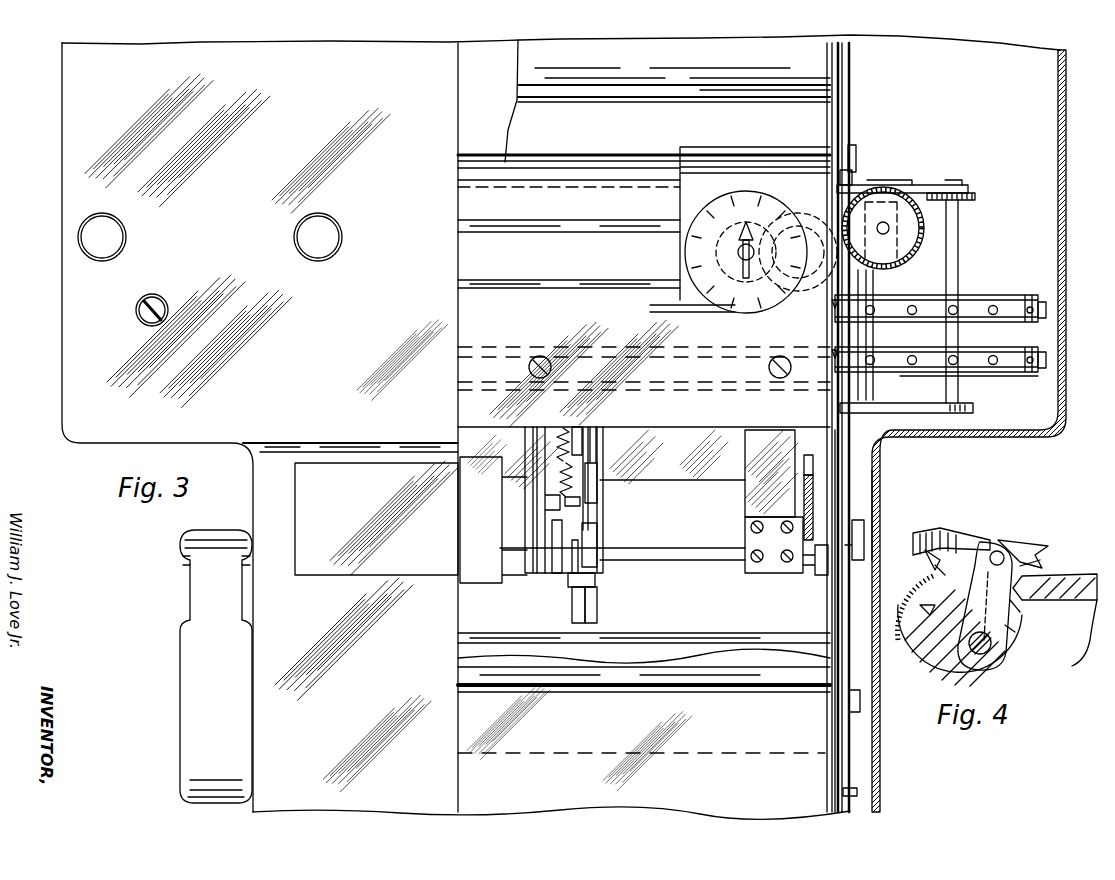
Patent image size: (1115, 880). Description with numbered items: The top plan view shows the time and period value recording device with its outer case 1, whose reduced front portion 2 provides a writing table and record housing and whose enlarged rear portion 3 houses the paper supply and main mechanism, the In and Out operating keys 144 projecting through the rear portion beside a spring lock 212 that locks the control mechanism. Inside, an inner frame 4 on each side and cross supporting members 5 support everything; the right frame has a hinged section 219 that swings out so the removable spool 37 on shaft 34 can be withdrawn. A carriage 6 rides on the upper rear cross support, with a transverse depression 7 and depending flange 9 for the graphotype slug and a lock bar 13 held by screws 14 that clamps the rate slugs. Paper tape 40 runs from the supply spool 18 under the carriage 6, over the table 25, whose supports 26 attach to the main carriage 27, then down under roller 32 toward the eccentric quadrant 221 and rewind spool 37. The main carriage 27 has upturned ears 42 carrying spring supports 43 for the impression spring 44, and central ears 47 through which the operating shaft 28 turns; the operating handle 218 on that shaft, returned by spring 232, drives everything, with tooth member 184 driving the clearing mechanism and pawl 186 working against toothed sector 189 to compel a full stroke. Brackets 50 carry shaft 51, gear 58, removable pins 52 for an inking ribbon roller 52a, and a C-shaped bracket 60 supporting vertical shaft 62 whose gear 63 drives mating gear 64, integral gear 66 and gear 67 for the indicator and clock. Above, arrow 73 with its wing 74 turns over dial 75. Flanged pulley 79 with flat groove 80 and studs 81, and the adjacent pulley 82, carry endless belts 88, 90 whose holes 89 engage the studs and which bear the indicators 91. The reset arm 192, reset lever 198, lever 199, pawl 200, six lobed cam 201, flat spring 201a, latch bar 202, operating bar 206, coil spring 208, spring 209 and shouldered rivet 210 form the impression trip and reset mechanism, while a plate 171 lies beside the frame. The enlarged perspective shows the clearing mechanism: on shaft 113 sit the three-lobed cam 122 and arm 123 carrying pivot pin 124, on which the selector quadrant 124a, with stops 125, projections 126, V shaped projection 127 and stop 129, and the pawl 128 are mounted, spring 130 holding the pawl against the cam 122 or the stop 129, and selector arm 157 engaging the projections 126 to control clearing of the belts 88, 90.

In FIG. 3, the outer case 1 is at (456, 431).
In FIG. 3, the reduced front portion 2 is at (272, 737).
In FIG. 3, the enlarged rear portion 3 is at (78, 105).
In FIG. 3, the inner frame 4 is at (850, 752).
In FIG. 3, the cross supporting member 5 is at (858, 168).
In FIG. 3, the carriage 6 is at (545, 210).
In FIG. 3, the transverse depression 7 is at (633, 230).
In FIG. 3, the depending flange 9 is at (598, 192).
In FIG. 3, the lock bar 13 is at (605, 345).
In FIG. 3, the screws 14 is at (772, 378).
In FIG. 3, the paper supply spool 18 is at (757, 103).
In FIG. 3, the table 25 is at (472, 586).
In FIG. 3, the support 26 is at (806, 468).
In FIG. 3, the main carriage 27 is at (712, 470).
In FIG. 3, the operating shaft 28 is at (668, 552).
In FIG. 3, the roller 32 is at (683, 636).
In FIG. 3, the shaft 34 is at (850, 792).
In FIG. 3, the removable spool 37 is at (762, 752).
In FIG. 3, the paper tape 40 is at (503, 150).
In FIG. 3, the upturned ear 42 is at (806, 476).
In FIG. 3, the spring support 43 is at (748, 565).
In FIG. 3, the impression spring 44 is at (750, 490).
In FIG. 3, the upturned ears 47 is at (520, 522).
In FIG. 3, the brackets 50 is at (965, 185).
In FIG. 3, the shaft 51 is at (960, 282).
In FIG. 3, the removable pins 52 is at (862, 185).
In FIG. 3, the inking ribbon roller 52a is at (878, 446).
In FIG. 3, the gear 58 is at (975, 200).
In FIG. 3, the bracket 60 is at (897, 191).
In FIG. 3, the vertical shaft 62 is at (905, 258).
In FIG. 3, the gear 63 is at (928, 224).
In FIG. 3, the mating gear 64 is at (835, 283).
In FIG. 3, the gear 66 is at (835, 280).
In FIG. 3, the gear 67 is at (752, 302).
In FIG. 3, the arrow 73 is at (748, 226).
In FIG. 3, the wing 74 is at (730, 260).
In FIG. 3, the dial 75 is at (733, 310).
In FIG. 3, the flanged pulley 79 is at (1000, 378).
In FIG. 3, the flat groove 80 is at (1037, 372).
In FIG. 3, the studs 81 is at (1040, 362).
In FIG. 3, the pulley 82 is at (1003, 295).
In FIG. 3, the endless belt 88 is at (900, 358).
In FIG. 3, the holes 89 is at (912, 364).
In FIG. 3, the belt 90 is at (915, 313).
In FIG. 3, the indicators 91 is at (832, 333).
In FIG. 4, the shaft 113 is at (993, 648).
In FIG. 4, the three-lobed cam 122 is at (960, 672).
In FIG. 4, the arm 123 is at (995, 670).
In FIG. 4, the pivot pin 124 is at (1020, 558).
In FIG. 4, the selector quadrant 124a is at (1008, 545).
In FIG. 4, the stops 125 is at (938, 571).
In FIG. 4, the projections 126 is at (1040, 553).
In FIG. 4, the V shaped projection 127 is at (1055, 587).
In FIG. 4, the pawl 128 is at (957, 540).
In FIG. 4, the stop 129 is at (935, 555).
In FIG. 4, the spring 130 is at (945, 622).
In FIG. 3, the operating key 144 is at (103, 262).
In FIG. 4, the selector arm 157 is at (1088, 640).
In FIG. 3, the plate 171 is at (835, 618).
In FIG. 3, the tooth member 184 is at (862, 545).
In FIG. 4, the pawl 186 is at (922, 610).
In FIG. 3, the toothed sector 189 is at (874, 512).
In FIG. 3, the reset arm 192 is at (545, 500).
In FIG. 3, the reset lever 198 is at (556, 570).
In FIG. 3, the lever 199 is at (568, 598).
In FIG. 3, the pawl 200 is at (594, 625).
In FIG. 3, the six lobed cam 201 is at (592, 545).
In FIG. 3, the flat spring 201a is at (588, 590).
In FIG. 3, the latch bar 202 is at (578, 440).
In FIG. 3, the operating bar 206 is at (588, 445).
In FIG. 3, the coil spring 208 is at (552, 432).
In FIG. 3, the spring 209 is at (560, 478).
In FIG. 3, the shouldered rivet 210 is at (590, 485).
In FIG. 3, the spring lock 212 is at (165, 297).
In FIG. 3, the operating handle 218 is at (185, 660).
In FIG. 3, the hinged section 219 is at (853, 780).
In FIG. 3, the eccentric quadrant 221 is at (735, 672).
In FIG. 3, the spring 232 is at (812, 560).